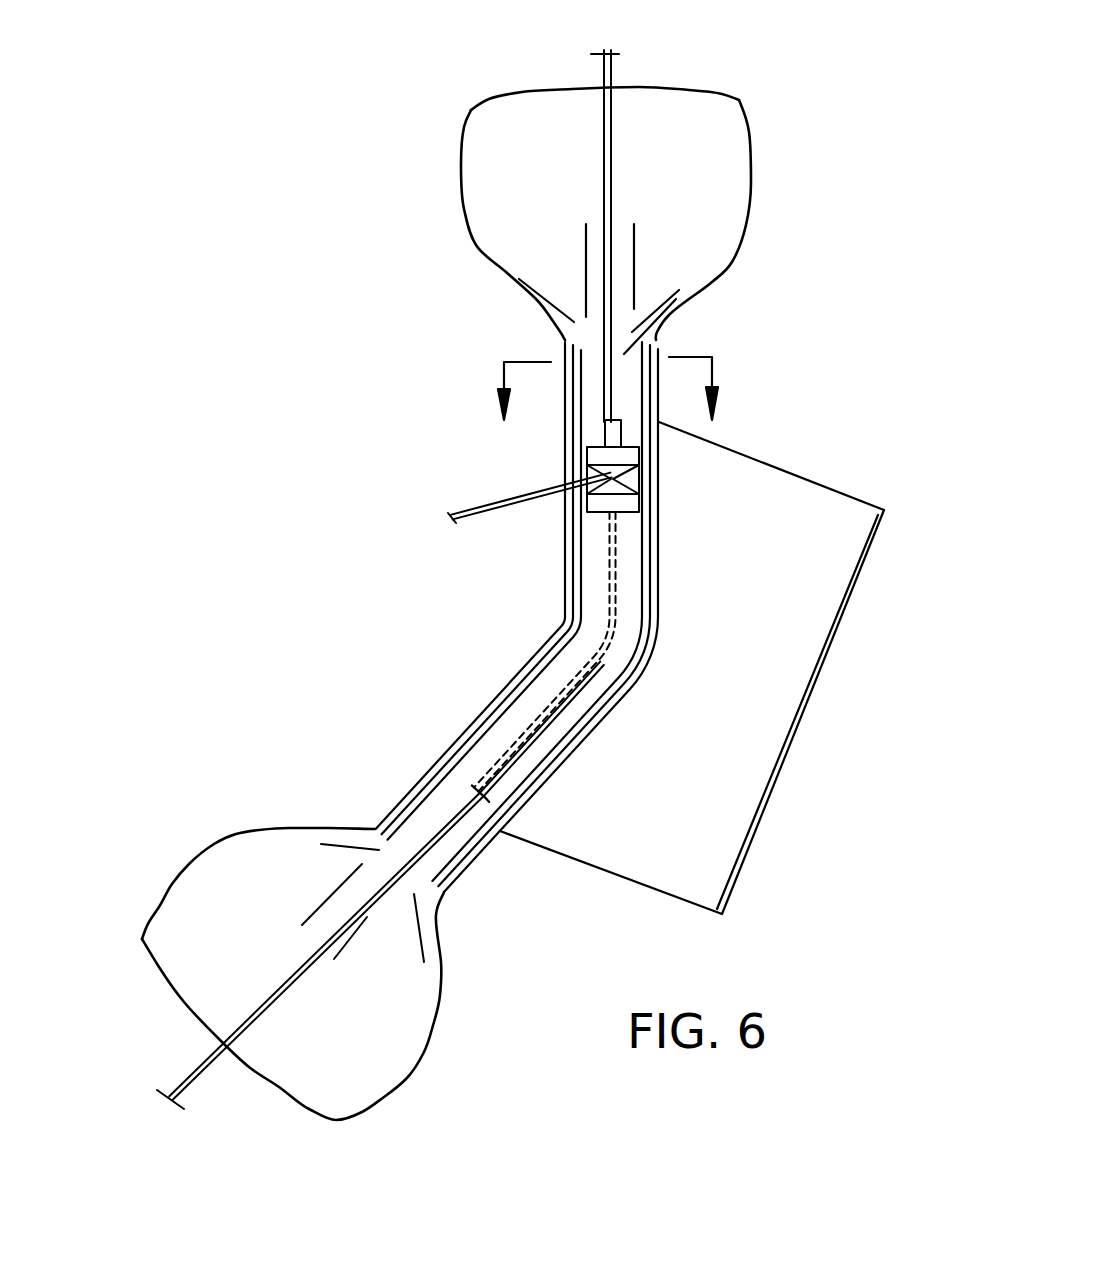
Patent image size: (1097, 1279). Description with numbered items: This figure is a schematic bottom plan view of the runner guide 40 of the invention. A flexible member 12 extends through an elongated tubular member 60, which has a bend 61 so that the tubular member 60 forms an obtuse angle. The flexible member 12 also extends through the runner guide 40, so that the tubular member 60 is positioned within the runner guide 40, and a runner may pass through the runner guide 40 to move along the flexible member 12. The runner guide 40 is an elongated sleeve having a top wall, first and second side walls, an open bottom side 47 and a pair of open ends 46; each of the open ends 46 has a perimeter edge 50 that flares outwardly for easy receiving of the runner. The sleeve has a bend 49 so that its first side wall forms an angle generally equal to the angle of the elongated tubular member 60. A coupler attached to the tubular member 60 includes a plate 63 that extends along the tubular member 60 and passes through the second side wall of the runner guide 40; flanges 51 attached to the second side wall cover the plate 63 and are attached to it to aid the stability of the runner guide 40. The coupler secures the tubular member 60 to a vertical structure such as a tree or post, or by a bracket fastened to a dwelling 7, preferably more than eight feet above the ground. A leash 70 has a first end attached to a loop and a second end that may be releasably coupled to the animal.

The flexible member 12 is at (192, 1065).
The runner guide 40 is at (431, 518).
The pair of open ends 46 is at (700, 100).
The open bottom side 47 is at (690, 298).
The bend 49 is at (562, 622).
The perimeter edge 50 is at (752, 178).
The flanges 51 is at (755, 482).
The elongated tubular member 60 is at (472, 787).
The bend 61 is at (595, 652).
The plate 63 is at (487, 800).
The leash 70 is at (483, 503).
The dwelling 7 is at (607, 387).